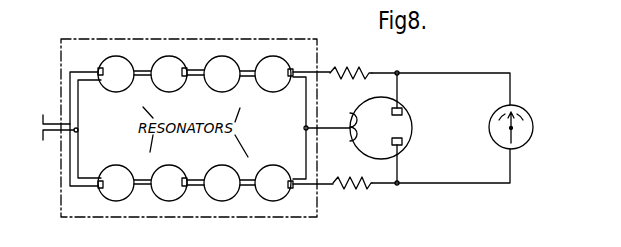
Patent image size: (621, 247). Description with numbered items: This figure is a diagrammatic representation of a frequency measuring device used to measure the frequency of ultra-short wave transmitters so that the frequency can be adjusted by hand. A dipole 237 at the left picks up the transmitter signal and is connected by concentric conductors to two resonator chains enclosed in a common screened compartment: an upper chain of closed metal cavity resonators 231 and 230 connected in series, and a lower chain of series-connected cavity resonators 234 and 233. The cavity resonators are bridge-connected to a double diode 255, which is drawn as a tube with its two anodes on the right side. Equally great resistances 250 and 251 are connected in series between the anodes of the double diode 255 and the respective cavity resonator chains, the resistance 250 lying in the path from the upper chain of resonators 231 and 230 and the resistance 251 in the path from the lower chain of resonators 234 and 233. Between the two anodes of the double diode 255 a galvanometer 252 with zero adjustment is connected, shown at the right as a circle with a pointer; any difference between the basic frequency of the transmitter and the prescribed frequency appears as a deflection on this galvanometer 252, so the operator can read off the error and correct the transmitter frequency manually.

The dipole 237 is at (54, 130).
The closed metal cavity resonator 231 is at (145, 78).
The closed metal cavity resonator 230 is at (252, 78).
The cavity resonator 234 is at (141, 178).
The cavity resonator 233 is at (247, 178).
The resistance 250 is at (358, 69).
The resistance 251 is at (362, 187).
The double diode 255 is at (367, 103).
The current source 252 is at (533, 120).